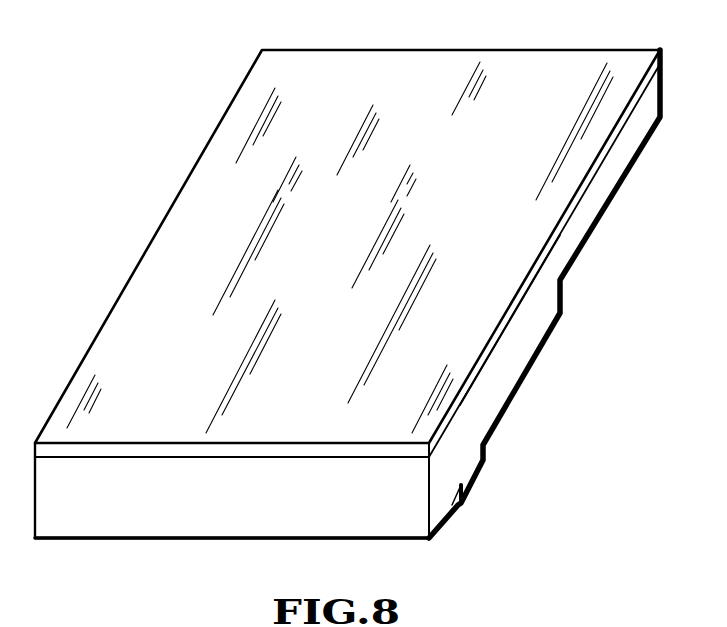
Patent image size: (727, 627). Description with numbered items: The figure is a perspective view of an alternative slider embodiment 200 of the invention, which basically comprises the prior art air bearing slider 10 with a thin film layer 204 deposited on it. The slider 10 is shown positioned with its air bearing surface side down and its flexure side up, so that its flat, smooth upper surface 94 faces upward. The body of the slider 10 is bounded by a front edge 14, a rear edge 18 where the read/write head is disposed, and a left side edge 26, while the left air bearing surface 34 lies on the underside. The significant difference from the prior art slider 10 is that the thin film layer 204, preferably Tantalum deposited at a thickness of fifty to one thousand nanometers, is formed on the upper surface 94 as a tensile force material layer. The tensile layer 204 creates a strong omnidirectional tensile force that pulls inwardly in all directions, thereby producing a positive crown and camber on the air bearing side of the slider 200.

The alternative slider embodiment 200 is at (160, 46).
The rear edge 18 is at (497, 50).
The thin film layer 204 is at (340, 304).
The upper surface 94 is at (488, 362).
The air bearing slider 10 is at (125, 527).
The front edge 14 is at (238, 508).
The left side edge 26 is at (545, 307).
The left air bearing surface 34 is at (472, 468).